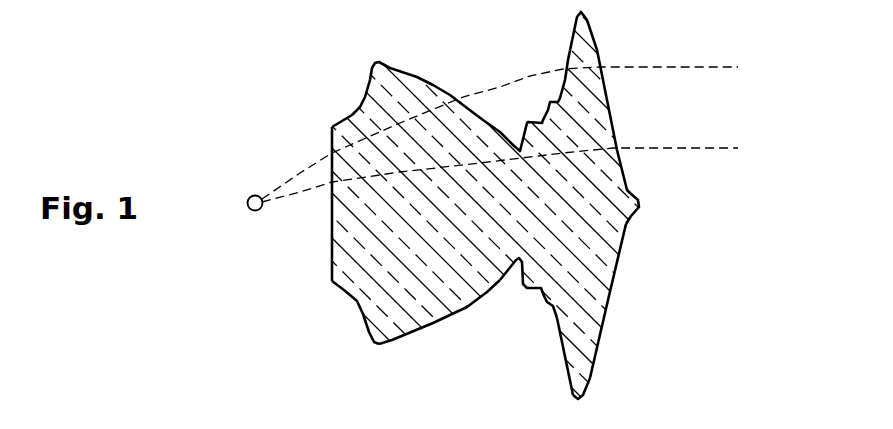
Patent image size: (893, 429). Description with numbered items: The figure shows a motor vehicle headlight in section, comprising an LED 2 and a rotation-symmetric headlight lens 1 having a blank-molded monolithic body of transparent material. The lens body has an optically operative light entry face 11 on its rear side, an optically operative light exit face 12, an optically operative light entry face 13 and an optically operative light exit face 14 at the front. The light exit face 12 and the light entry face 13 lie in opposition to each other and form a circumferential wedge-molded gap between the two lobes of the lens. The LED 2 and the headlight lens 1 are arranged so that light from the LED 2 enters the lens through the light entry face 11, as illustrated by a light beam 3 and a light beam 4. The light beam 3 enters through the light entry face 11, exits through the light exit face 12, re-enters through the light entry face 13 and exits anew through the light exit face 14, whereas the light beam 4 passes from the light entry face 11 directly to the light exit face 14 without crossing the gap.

The headlight lens 1 is at (404, 97).
The LED 2 is at (247, 203).
The light beam 3 is at (723, 67).
The light beam 4 is at (720, 148).
The light entry face 11 is at (331, 250).
The light exit face 12 is at (477, 302).
The light entry face 13 is at (560, 345).
The light exit face 14 is at (610, 297).